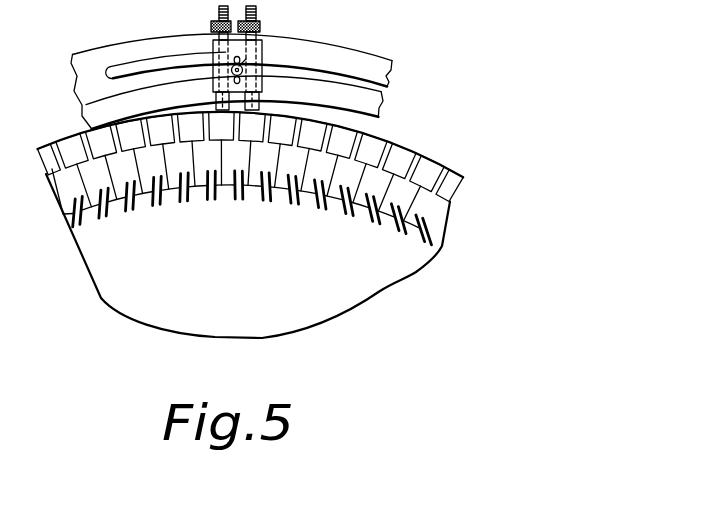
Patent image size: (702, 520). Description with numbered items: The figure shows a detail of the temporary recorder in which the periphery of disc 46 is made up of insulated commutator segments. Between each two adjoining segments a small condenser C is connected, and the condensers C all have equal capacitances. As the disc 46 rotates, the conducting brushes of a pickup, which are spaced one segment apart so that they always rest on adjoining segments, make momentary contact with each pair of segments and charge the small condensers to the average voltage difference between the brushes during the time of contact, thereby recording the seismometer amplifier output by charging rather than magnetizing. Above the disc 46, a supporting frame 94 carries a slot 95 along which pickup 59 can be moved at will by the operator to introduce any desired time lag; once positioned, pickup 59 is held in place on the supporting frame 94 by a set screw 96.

The disc 46 is at (446, 164).
The pickup 59 is at (216, 48).
The supporting frame 94 is at (382, 62).
The slot 95 is at (315, 75).
The set screw 96 is at (243, 66).
The condenser C is at (183, 196).